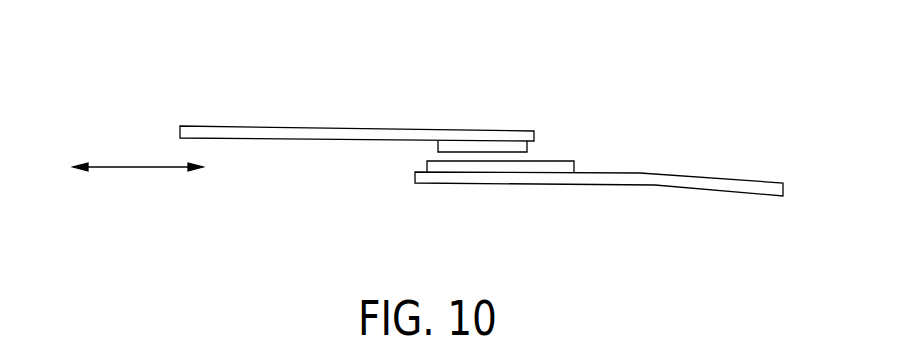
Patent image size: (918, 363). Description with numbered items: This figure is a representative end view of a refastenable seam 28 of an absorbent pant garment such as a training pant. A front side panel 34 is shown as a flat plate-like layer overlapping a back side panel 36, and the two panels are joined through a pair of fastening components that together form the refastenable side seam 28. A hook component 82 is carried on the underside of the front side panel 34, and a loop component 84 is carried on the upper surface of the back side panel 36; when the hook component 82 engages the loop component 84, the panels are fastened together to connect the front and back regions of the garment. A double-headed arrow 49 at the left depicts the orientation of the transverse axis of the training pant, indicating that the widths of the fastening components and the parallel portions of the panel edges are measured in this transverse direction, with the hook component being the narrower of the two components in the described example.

The refastenable side seam 28 is at (568, 148).
The front side panel 34 is at (337, 132).
The back side panel 36 is at (647, 187).
The transverse axis arrow 49 is at (128, 167).
The hook component 82 is at (510, 150).
The loop component 84 is at (513, 165).